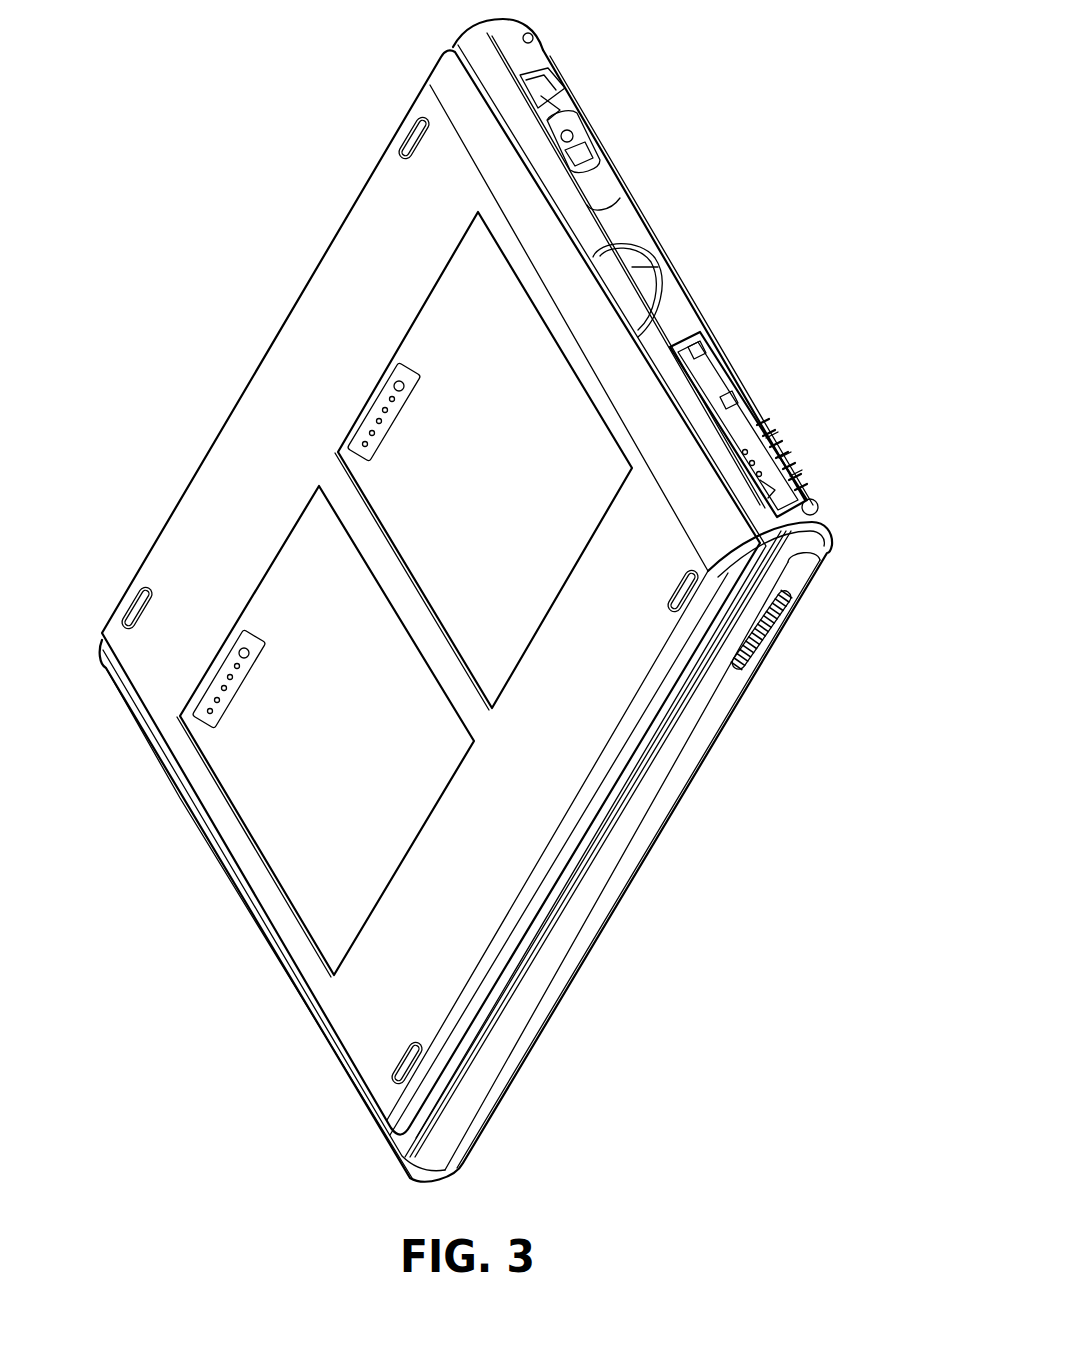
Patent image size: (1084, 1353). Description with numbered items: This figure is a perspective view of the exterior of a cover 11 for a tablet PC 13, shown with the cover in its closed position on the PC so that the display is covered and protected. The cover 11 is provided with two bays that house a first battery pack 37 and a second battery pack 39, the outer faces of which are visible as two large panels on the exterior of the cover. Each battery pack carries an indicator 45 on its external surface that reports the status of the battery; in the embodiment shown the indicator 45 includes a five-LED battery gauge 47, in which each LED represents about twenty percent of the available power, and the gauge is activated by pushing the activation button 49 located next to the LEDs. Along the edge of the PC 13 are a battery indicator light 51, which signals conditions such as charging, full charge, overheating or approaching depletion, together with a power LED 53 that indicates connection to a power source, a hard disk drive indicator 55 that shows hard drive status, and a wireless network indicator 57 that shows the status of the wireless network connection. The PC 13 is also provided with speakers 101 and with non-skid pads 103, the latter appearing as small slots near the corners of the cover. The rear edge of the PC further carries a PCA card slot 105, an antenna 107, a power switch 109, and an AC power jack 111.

The cover 11 is at (441, 971).
The tablet PC 13 is at (622, 896).
The first battery pack 37 is at (356, 777).
The second battery pack 39 is at (509, 581).
The indicator 45 is at (262, 630).
The five-LED battery gauge 47 is at (214, 704).
The activation button 49 is at (249, 655).
The battery indicator light 51 is at (791, 456).
The power LED 53 is at (798, 473).
The hard disk drive indicator 55 is at (778, 436).
The wireless network indicator 57 is at (763, 425).
The speakers 101 is at (760, 647).
The non-skid pads 103 is at (414, 136).
The PCA card slot 105 is at (719, 377).
The antenna 107 is at (634, 257).
The power switch 109 is at (581, 137).
The AC power jack 111 is at (548, 92).